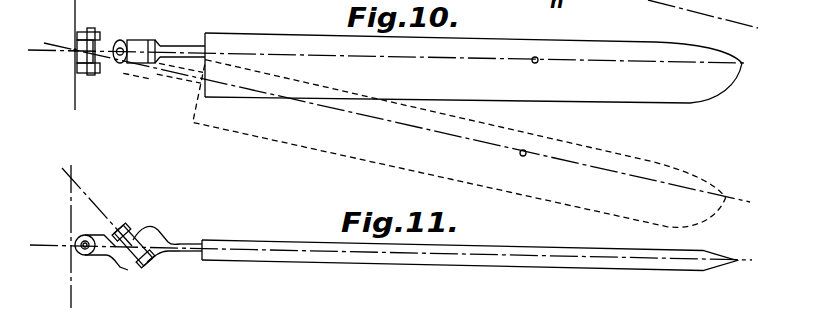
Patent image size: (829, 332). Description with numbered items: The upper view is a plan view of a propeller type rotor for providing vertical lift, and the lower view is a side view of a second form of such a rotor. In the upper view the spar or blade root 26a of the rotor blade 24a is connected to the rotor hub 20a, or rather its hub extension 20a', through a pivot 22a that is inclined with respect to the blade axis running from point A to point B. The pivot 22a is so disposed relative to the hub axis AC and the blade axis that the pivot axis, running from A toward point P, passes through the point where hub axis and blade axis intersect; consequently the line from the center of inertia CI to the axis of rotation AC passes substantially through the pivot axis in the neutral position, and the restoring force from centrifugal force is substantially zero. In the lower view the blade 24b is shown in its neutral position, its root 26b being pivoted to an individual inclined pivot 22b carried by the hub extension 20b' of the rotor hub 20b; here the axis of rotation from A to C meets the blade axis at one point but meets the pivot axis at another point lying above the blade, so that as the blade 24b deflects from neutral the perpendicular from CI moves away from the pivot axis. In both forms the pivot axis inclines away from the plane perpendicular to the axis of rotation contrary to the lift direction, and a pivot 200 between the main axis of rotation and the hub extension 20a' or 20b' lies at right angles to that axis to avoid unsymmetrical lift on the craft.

In FIG. 10, the pivot 200 is at (89, 30).
In FIG. 11, the pivot 200 is at (84, 251).
In FIG. 10, the rotor hub 20a is at (97, 77).
In FIG. 10, the hub extension 20a' is at (159, 84).
In FIG. 10, the pivot 22a is at (114, 47).
In FIG. 10, the rotor blade 24a is at (321, 37).
In FIG. 10, the spar or blade root 26a is at (187, 46).
In FIG. 11, the rotor hub 20b is at (102, 271).
In FIG. 11, the hub extension 20b' is at (134, 288).
In FIG. 11, the inclined pivot 22b is at (151, 262).
In FIG. 11, the blade 24b is at (401, 262).
In FIG. 11, the blade root 26b is at (193, 241).
In FIG. 10, the hub axis AC is at (74, 51).
In FIG. 10, the center of inertia CI is at (537, 57).
In FIG. 11, the point of intersection of hub axis and blade axis A is at (72, 247).
In FIG. 10, the blade axis end point B is at (744, 63).
In FIG. 11, the blade axis end point B is at (738, 261).
In FIG. 11, the hub axis end point C is at (97, 205).
In FIG. 10, the pivot axis end point P is at (748, 0).